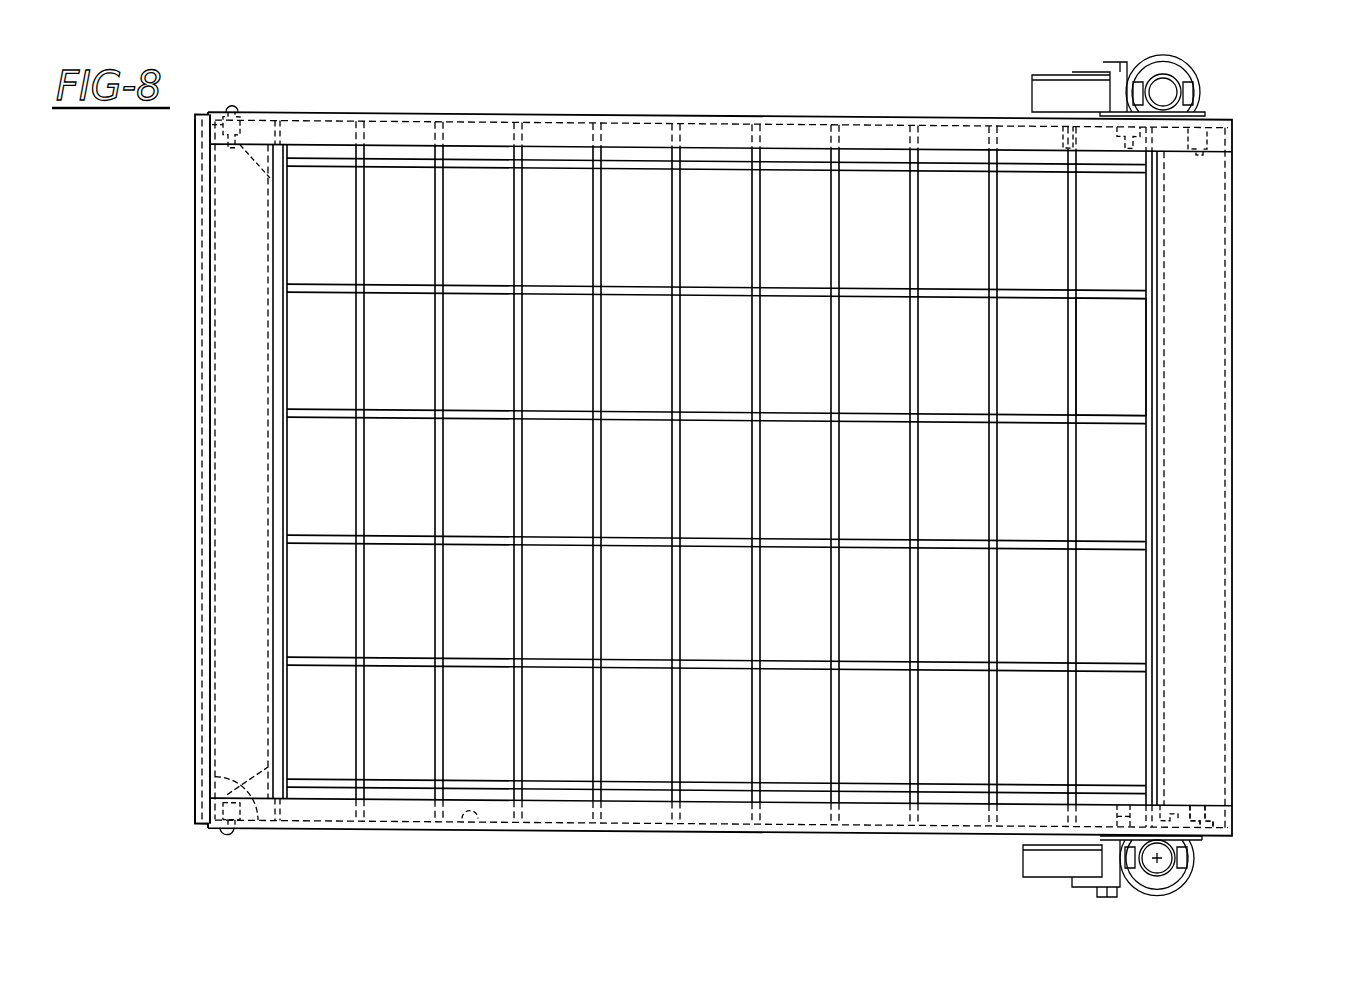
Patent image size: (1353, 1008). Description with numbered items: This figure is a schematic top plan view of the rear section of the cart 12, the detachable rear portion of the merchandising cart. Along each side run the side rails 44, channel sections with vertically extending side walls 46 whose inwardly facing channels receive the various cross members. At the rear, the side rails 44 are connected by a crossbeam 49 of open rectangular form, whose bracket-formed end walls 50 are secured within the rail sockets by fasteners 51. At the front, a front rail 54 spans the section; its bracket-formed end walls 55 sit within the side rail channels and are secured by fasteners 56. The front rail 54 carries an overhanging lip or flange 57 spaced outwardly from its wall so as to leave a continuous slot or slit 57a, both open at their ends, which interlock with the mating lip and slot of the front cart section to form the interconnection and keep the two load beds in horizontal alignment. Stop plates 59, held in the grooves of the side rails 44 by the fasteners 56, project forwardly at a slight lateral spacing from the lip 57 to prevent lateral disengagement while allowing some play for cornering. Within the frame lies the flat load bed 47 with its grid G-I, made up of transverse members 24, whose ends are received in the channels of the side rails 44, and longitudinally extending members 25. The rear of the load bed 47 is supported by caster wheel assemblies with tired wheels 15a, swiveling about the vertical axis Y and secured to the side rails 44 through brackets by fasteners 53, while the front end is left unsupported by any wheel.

The rear section of the cart 12 is at (1262, 183).
The side rails 44 is at (826, 116).
The overhanging lip or flange 57 is at (197, 200).
The continuous slot or slit 57a is at (203, 222).
The front rail 54 is at (222, 368).
The crossbeam 49 is at (1233, 668).
The transverse members 24 is at (1068, 588).
The flat load bed 47 is at (1085, 499).
The longitudinally extending members 25 is at (1120, 290).
The grid G-I is at (1125, 371).
The bracket-formed end walls 55 is at (228, 787).
The fasteners 56 is at (232, 835).
The stop plates 59 is at (200, 830).
The vertically extending side walls 46 is at (481, 832).
The fasteners 51 is at (1195, 800).
The end walls 50 is at (1215, 810).
The fasteners 53 is at (1062, 820).
The tired wheels 15a is at (1030, 870).
The vertical axis Y is at (1157, 858).